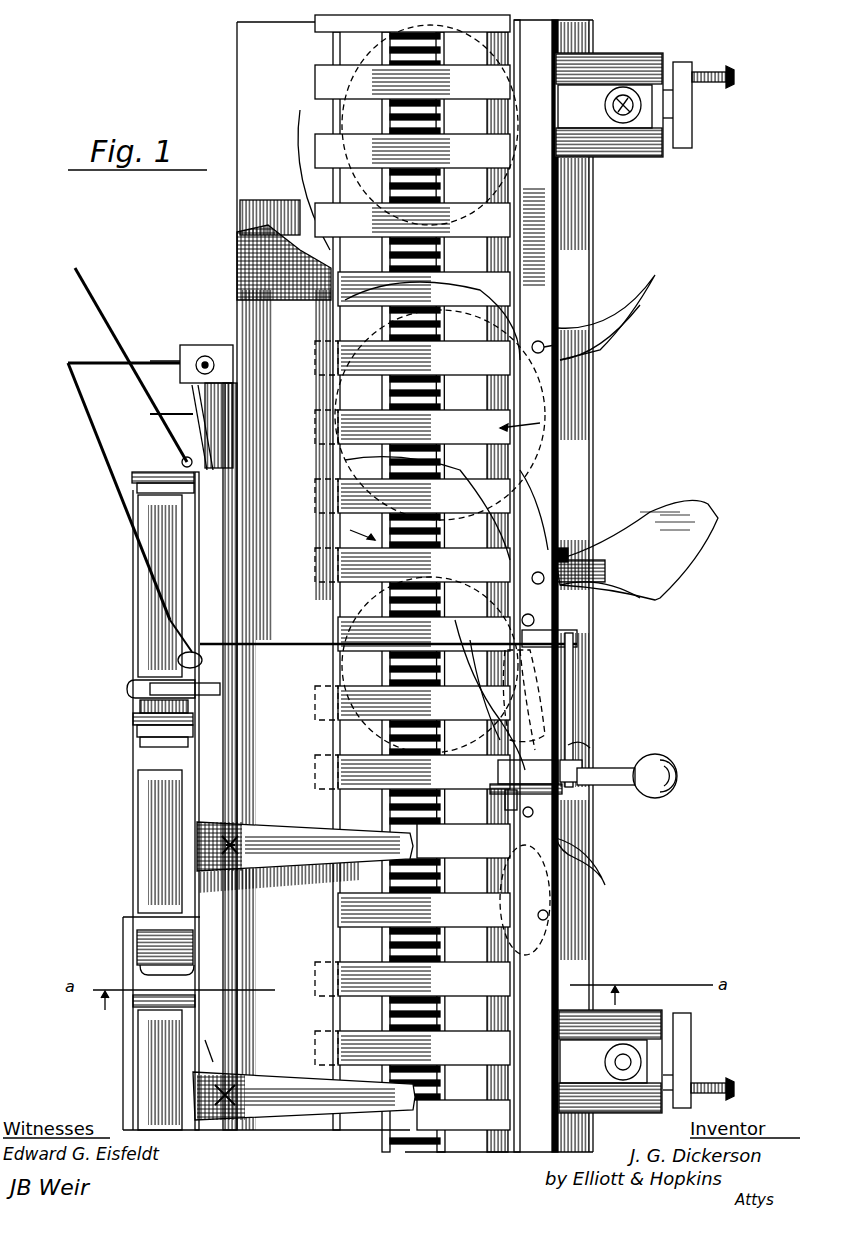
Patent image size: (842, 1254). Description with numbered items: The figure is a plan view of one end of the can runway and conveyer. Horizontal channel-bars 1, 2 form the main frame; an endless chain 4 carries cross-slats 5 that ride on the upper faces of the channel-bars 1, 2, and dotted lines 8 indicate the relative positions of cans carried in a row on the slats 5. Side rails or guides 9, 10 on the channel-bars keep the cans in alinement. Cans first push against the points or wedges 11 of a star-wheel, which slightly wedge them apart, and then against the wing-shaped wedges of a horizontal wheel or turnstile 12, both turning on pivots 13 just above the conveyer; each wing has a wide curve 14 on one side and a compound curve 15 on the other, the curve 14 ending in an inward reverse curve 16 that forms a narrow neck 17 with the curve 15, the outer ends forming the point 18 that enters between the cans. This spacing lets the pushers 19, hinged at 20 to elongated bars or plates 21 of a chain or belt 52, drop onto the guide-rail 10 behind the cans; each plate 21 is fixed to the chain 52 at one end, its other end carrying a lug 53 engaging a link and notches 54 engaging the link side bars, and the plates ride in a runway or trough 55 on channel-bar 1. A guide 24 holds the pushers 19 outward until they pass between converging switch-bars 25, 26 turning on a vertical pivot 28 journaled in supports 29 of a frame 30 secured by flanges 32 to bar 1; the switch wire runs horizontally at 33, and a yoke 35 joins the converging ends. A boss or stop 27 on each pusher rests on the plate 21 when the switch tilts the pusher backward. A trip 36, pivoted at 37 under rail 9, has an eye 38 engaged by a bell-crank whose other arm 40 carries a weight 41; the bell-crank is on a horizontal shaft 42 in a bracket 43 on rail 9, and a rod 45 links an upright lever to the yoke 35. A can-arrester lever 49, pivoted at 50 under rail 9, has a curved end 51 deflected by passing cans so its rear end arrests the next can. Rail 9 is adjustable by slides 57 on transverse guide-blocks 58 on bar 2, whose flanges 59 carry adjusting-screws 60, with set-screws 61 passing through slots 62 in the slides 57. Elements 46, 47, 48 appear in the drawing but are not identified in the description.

The channel-bar 1 is at (253, 214).
The channel-bar 2 is at (580, 405).
The chain 4 is at (440, 115).
The cross-slats 5 is at (322, 95).
The dotted lines 8 is at (439, 475).
The side rail or guide 9 is at (543, 193).
The side rail or guide 10 is at (263, 887).
The points or wedges 11 is at (640, 296).
The horizontal wheel or turnstile 12 is at (560, 548).
The pivots 13 is at (556, 336).
The wide arc or curve 14 is at (690, 568).
The compound curve 15 is at (672, 515).
The inward reverse curve 16 is at (622, 585).
The narrow neck 17 is at (600, 555).
The point of the wedge 18 is at (716, 516).
The pushers 19 is at (107, 322).
The hinge 20 is at (185, 557).
The bar or plate 21 is at (163, 510).
The guide 24 is at (156, 414).
The guide-rail of switch 25 is at (93, 433).
The guide-rail of switch 26 is at (193, 410).
The boss or stop 27 is at (173, 450).
The vertical pivot 28 is at (222, 1037).
The supports 29 is at (190, 350).
The frame 30 is at (200, 468).
The flanges 32 is at (230, 942).
The horizontal portion 33 is at (160, 360).
The yoke 35 is at (215, 660).
The trip 36 is at (498, 770).
The pivot 37 is at (522, 618).
The eye 38 is at (592, 755).
The arm of bell-crank lever 40 is at (635, 786).
The weight 41 is at (677, 779).
The horizontal shaft 42 is at (575, 715).
The bracket 43 is at (545, 695).
The rod 45 is at (304, 648).
The bolt head 46 is at (136, 682).
The bolt 47 is at (222, 700).
The nut 48 is at (140, 708).
The lever 49 is at (580, 854).
The pivot 50 is at (535, 812).
The rounded or curved end 51 is at (545, 942).
The chain or belt 52 is at (132, 563).
The lug or downward projection 53 is at (146, 473).
The notches 54 is at (133, 484).
The runway or trough 55 is at (130, 925).
The slides 57 is at (592, 92).
The transverse guide-blocks 58 is at (690, 107).
The flanges 59 is at (692, 140).
The adjusting-screws 60 is at (734, 80).
The set-screws 61 is at (623, 95).
The slots 62 is at (650, 152).